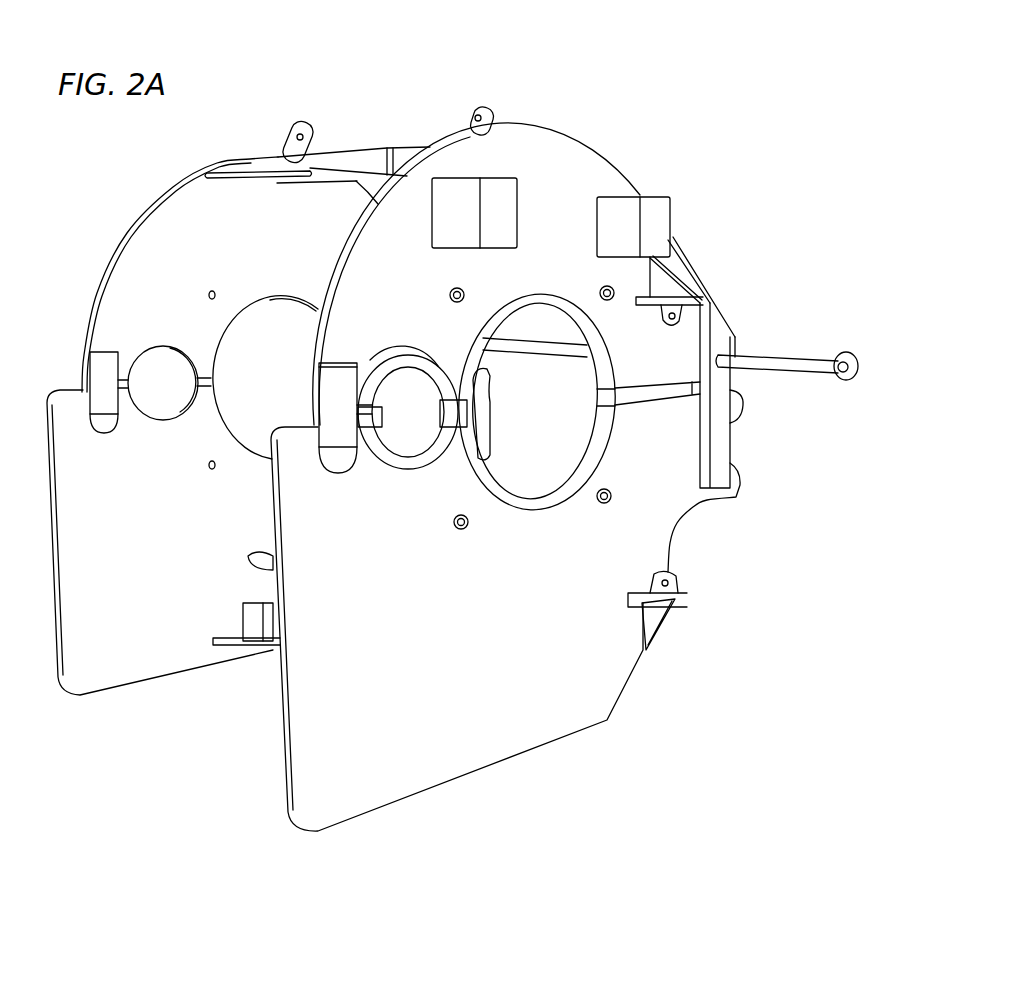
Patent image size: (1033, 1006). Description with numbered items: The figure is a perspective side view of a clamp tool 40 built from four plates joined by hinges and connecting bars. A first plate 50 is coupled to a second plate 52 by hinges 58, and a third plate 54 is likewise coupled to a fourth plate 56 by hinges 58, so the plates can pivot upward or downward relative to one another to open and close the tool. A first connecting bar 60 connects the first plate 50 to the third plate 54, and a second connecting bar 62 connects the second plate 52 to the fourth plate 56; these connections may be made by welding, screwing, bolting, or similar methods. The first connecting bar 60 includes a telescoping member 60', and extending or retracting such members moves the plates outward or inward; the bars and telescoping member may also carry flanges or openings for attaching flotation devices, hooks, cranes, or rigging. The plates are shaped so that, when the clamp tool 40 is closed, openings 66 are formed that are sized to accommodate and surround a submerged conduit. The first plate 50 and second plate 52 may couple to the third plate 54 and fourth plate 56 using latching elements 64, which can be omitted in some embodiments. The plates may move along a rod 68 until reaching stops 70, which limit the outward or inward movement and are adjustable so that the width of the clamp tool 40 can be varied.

The clamp tool 40 is at (740, 152).
The first plate 50 is at (411, 303).
The second plate 52 is at (441, 650).
The third plate 54 is at (251, 247).
The fourth plate 56 is at (151, 587).
The hinges 58 is at (725, 322).
The first connecting bar 60 is at (350, 137).
The telescoping member 60' is at (435, 124).
The second connecting bar 62 is at (270, 650).
The latching elements 64 is at (100, 350).
The openings 66 is at (404, 441).
The rod 68 is at (800, 372).
The stops 70 is at (851, 352).